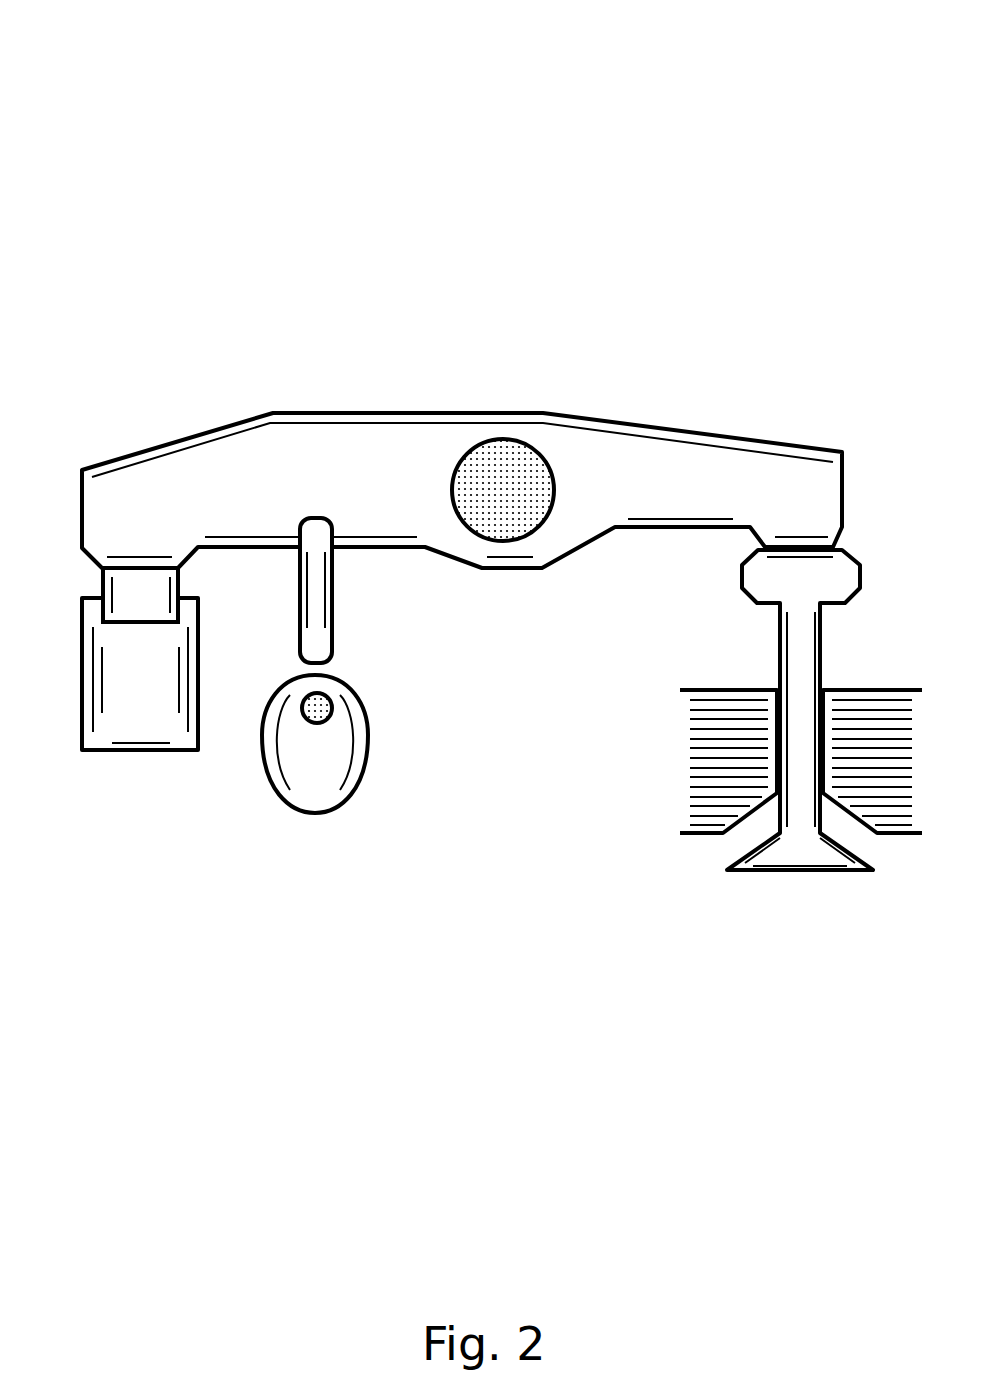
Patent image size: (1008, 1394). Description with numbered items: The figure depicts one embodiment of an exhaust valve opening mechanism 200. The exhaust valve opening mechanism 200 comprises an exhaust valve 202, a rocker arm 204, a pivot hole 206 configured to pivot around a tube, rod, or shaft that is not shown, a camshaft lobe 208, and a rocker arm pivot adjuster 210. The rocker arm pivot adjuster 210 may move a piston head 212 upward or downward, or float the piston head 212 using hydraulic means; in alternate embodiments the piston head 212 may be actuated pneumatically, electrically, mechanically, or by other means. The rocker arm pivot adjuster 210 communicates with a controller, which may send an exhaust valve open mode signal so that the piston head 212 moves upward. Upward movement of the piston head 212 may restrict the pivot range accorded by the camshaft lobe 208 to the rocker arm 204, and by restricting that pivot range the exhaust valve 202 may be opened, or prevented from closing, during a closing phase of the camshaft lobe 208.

The exhaust valve opening mechanism 200 is at (96, 67).
The exhaust valve 202 is at (803, 870).
The rocker arm 204 is at (346, 412).
The pivot hole 206 is at (533, 447).
The camshaft lobe 208 is at (368, 745).
The rocker arm pivot adjuster 210 is at (145, 750).
The piston head 212 is at (100, 577).